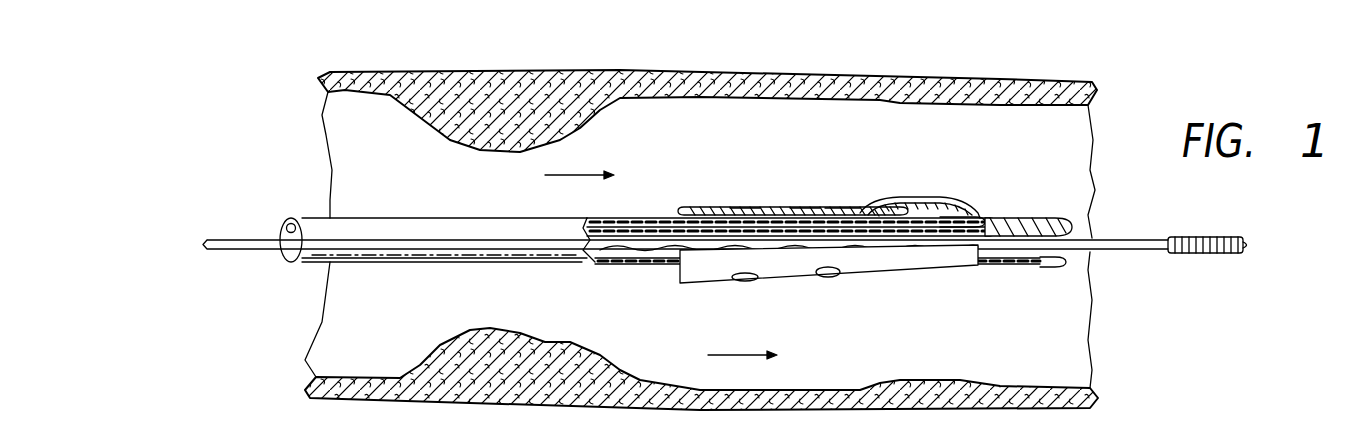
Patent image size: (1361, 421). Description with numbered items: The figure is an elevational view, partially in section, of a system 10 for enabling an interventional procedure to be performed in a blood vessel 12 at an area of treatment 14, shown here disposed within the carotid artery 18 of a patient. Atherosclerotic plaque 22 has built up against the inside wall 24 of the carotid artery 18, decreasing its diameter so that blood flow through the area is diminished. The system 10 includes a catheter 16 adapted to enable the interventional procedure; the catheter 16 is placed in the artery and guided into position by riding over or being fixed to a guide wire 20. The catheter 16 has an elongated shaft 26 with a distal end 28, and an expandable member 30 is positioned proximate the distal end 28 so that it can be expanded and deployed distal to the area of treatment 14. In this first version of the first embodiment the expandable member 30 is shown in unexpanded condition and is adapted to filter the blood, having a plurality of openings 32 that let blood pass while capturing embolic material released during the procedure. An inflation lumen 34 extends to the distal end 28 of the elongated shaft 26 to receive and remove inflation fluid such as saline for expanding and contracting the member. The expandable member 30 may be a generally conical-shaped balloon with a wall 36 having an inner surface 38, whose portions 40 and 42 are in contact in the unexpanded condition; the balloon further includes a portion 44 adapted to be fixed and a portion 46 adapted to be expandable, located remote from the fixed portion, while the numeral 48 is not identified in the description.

The system 10 is at (936, 262).
The blood vessel 12 is at (1052, 88).
The area of treatment 14 is at (468, 82).
The catheter 16 is at (308, 258).
The carotid artery 18 is at (388, 82).
The guide wire 20 is at (1128, 250).
The atherosclerotic plaque 22 is at (530, 80).
The inside wall 24 is at (347, 83).
The elongated shaft 26 is at (400, 245).
The distal end 28 is at (1030, 222).
The expandable member 30 is at (768, 262).
The openings 32 is at (828, 275).
The inflation lumen 34 is at (634, 222).
The wall 36 is at (736, 208).
The inner surface 38 is at (800, 208).
The portion of inner surface 40 is at (920, 200).
The portion of inner surface 42 is at (782, 272).
The fixed portion 44 is at (957, 205).
The expandable portion 46 is at (704, 205).
The stent distal portion 48 is at (832, 208).